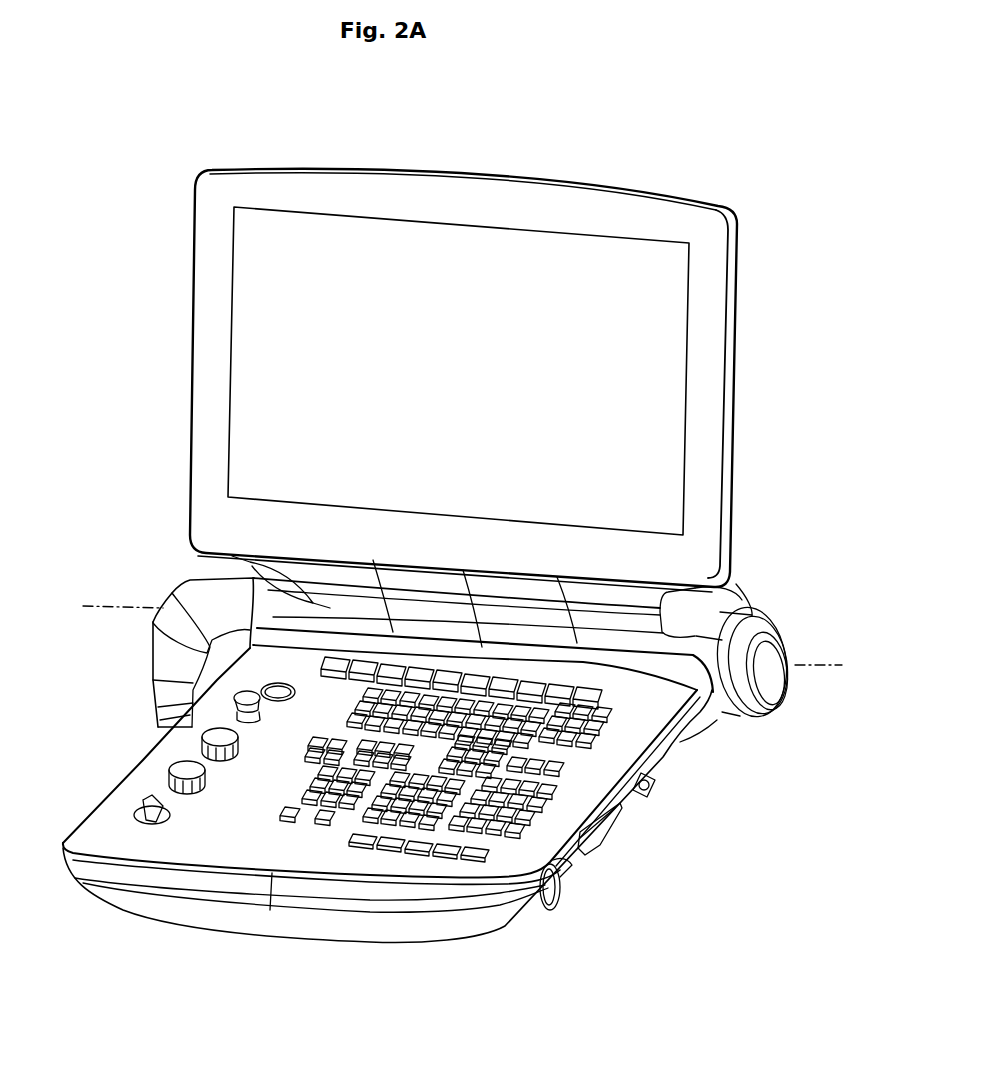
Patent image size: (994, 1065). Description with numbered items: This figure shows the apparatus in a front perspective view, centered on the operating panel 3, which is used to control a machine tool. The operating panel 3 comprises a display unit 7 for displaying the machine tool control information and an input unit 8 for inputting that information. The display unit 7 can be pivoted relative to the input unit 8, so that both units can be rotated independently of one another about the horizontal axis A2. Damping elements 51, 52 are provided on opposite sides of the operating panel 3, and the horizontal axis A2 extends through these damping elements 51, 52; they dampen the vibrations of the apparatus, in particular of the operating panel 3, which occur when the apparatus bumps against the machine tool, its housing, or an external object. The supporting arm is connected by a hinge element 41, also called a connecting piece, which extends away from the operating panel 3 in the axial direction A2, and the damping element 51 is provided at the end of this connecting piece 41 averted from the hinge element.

The operating panel 3 is at (157, 327).
The display unit 7 is at (455, 270).
The input unit 8 is at (242, 812).
The hinge element 41 is at (207, 598).
The damping element 51 is at (168, 618).
The damping element 52 is at (753, 628).
The horizontal axis A2 is at (100, 615).